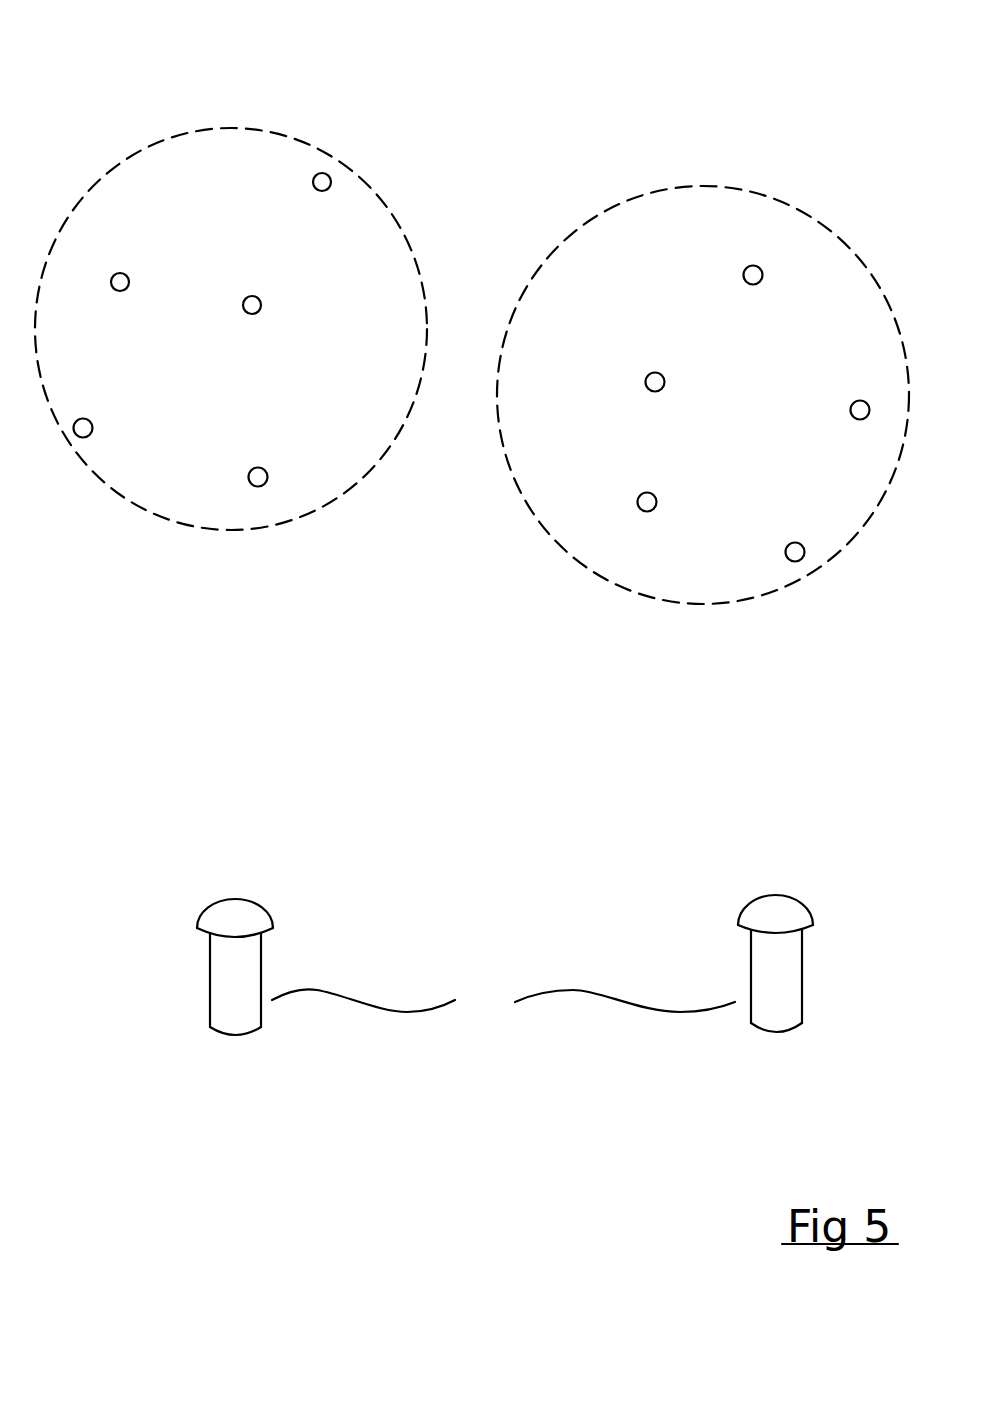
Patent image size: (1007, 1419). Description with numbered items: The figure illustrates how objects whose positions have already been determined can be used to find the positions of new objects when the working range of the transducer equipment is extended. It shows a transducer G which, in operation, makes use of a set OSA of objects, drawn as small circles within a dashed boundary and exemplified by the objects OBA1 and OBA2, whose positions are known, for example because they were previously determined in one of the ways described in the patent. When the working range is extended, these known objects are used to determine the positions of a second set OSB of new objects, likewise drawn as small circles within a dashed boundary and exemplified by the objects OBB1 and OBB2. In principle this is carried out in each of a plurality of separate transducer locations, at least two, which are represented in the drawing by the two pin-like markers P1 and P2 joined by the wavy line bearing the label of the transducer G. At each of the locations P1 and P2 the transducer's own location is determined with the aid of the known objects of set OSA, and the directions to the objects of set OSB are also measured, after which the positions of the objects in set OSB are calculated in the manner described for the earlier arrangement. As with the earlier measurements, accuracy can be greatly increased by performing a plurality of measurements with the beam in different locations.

The set of objects with known positions OSA is at (235, 113).
The set of new objects OSB is at (723, 178).
The object of known set OBA1 is at (126, 290).
The object of known set OBA2 is at (329, 189).
The new object OBB1 is at (661, 390).
The new object OBB2 is at (759, 283).
The transducer location P1 is at (202, 987).
The transducer location P2 is at (815, 1023).
The transducer G is at (503, 1004).